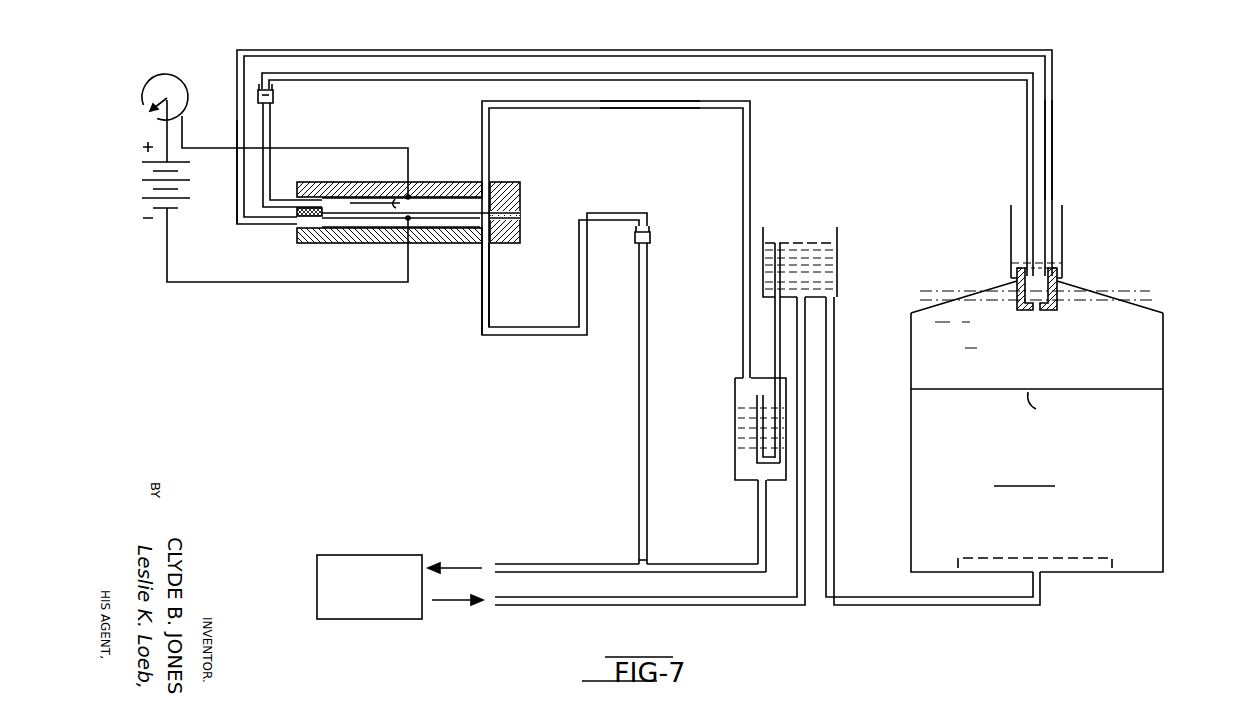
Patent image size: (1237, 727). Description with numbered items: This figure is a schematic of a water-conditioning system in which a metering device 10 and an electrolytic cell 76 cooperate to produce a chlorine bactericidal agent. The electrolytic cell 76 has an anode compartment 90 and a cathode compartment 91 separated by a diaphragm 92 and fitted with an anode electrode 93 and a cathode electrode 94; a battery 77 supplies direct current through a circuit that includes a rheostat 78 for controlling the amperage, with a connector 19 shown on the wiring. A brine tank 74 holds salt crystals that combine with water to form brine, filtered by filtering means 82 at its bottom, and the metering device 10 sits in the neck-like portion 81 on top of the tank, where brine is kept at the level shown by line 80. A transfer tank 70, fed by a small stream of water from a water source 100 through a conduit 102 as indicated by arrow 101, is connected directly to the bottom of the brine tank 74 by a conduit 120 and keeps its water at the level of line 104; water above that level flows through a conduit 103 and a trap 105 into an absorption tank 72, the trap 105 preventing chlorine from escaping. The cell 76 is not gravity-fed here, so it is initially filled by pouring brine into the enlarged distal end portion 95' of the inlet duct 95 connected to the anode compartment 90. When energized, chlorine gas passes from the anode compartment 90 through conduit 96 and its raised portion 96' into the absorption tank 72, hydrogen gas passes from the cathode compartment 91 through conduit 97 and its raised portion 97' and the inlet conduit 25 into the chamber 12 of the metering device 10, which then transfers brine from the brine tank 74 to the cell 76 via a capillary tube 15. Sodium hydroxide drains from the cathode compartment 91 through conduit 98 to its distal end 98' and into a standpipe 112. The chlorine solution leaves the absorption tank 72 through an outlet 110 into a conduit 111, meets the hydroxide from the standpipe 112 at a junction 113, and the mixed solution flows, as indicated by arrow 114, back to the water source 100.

The metering device 10 is at (1025, 312).
The chamber 12 is at (1040, 293).
The capillary tube 15 is at (640, 74).
The connector 19 is at (262, 85).
The inlet conduit 25 is at (1053, 126).
The transfer tank 70 is at (837, 276).
The absorption tank 72 is at (735, 405).
The brine tank 74 is at (1163, 450).
The electrolytic cell 76 is at (320, 248).
The battery 77 is at (138, 188).
The rheostat 78 is at (178, 76).
The line 80 is at (1062, 263).
The neck-like portion 81 is at (1062, 218).
The filtering means 82 is at (1053, 558).
The anode compartment 90 is at (352, 203).
The cathode compartment 91 is at (378, 225).
The diaphragm 92 is at (430, 212).
The anode electrode 93 is at (387, 200).
The cathode electrode 94 is at (450, 218).
The inlet duct 95 is at (292, 155).
The enlarged distal end portion 95' is at (286, 99).
The conduit 96 is at (616, 239).
The conduit portion 96' is at (641, 115).
The conduit 97 is at (220, 172).
The conduit portion 97' is at (644, 150).
The conduit 98 is at (564, 274).
The distal end 98' is at (625, 207).
The water source 100 is at (362, 554).
The arrow 101 is at (445, 603).
The conduit 102 is at (629, 607).
The conduit 103 is at (773, 324).
The line 104 is at (840, 243).
The trap 105 is at (757, 442).
The outlet 110 is at (758, 503).
The conduit 111 is at (540, 564).
The standpipe 112 is at (639, 418).
The junction 113 is at (638, 562).
The arrow 114 is at (457, 568).
The conduit 120 is at (834, 432).